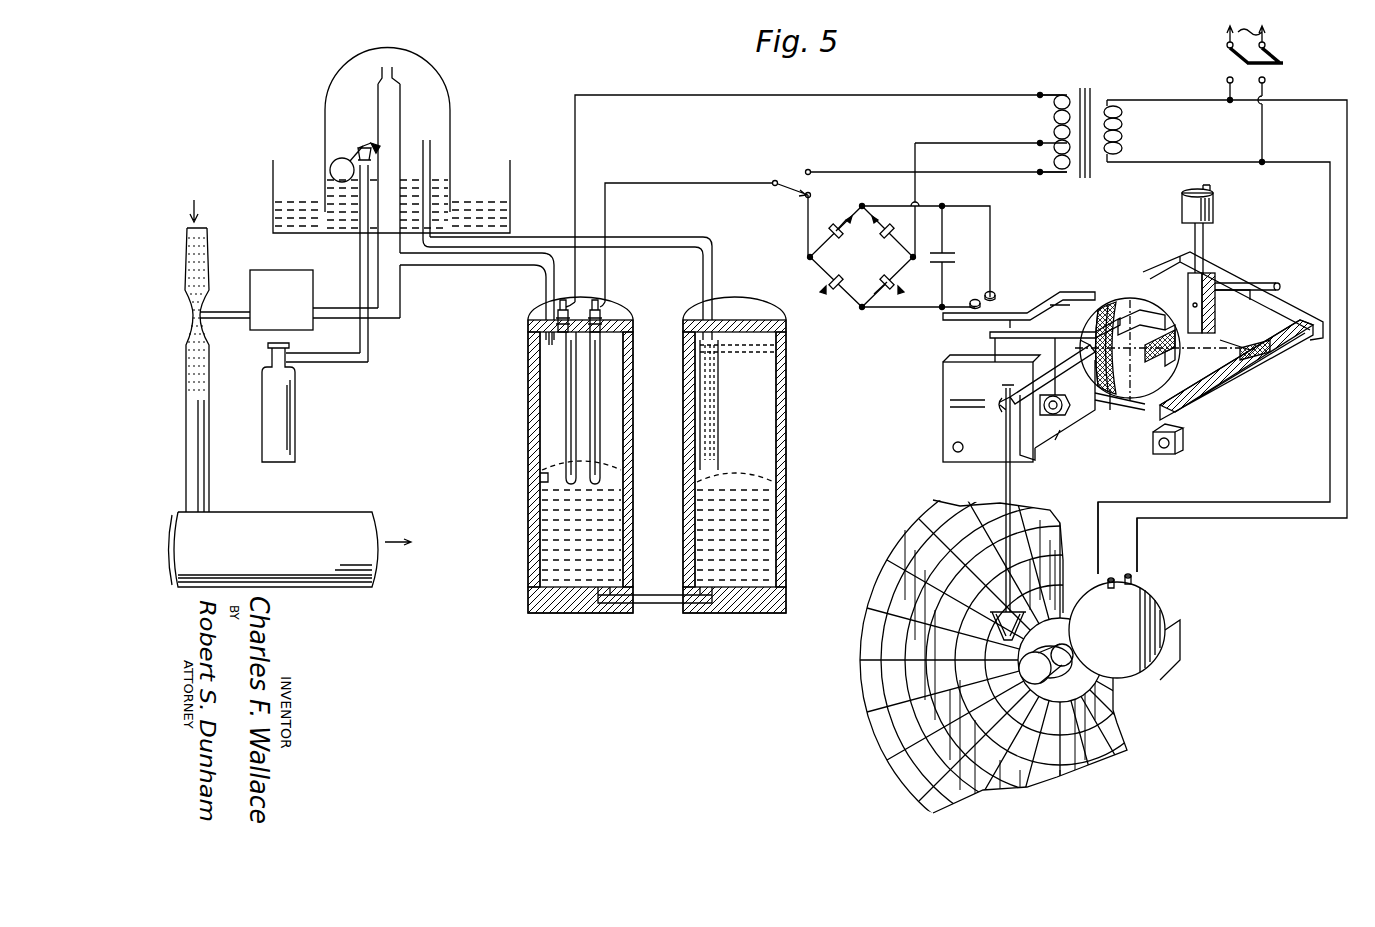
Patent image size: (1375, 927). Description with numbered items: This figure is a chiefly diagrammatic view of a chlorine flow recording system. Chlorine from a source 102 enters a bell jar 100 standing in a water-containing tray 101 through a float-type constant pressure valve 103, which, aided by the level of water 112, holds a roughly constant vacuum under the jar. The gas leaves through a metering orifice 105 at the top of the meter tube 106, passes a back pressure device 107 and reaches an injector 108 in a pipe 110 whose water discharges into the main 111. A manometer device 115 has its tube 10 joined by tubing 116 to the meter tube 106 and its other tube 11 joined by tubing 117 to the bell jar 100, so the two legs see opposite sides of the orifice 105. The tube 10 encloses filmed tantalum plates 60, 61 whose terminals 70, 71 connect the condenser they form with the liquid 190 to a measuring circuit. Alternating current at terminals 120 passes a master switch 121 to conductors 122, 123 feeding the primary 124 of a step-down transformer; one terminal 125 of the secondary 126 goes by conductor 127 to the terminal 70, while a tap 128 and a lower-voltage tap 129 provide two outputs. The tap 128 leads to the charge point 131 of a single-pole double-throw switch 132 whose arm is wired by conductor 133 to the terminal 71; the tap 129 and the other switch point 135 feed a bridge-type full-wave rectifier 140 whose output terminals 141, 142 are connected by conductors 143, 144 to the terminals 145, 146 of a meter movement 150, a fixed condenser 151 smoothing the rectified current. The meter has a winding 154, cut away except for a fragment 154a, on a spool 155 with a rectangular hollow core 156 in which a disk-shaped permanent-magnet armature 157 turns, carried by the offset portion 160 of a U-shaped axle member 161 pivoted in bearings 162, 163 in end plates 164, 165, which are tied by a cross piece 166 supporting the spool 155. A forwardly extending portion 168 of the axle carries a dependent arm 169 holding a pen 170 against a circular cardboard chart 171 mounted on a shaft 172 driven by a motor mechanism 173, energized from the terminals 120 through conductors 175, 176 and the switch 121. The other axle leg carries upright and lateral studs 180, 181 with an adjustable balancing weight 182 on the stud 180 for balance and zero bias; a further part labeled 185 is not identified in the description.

The manometer tube 10 is at (528, 383).
The manometer tube 11 is at (796, 382).
The filmed tantalum plate 60 is at (566, 420).
The filmed tantalum plate 61 is at (600, 442).
The terminal 70 is at (558, 303).
The terminal 71 is at (604, 303).
The bell jar 100 is at (450, 80).
The water-containing tray 101 is at (511, 178).
The source of chlorine gas 102 is at (293, 406).
The float-type constant pressure valve 103 is at (350, 152).
The metering orifice 105 is at (394, 68).
The meter tube 106 is at (398, 293).
The back pressure device 107 is at (290, 270).
The injector 108 is at (205, 290).
The pipe 110 is at (209, 368).
The main 111 is at (296, 512).
The level of water 112 is at (432, 162).
The manometer device 115 is at (519, 515).
The tubing 116 is at (460, 267).
The tubing 117 is at (668, 237).
The terminals 120 is at (1268, 36).
The master switch 121 is at (1276, 58).
The conductor 122 is at (1194, 100).
The conductor 123 is at (1199, 162).
The primary 124 is at (1110, 100).
The secondary terminal 125 is at (1042, 92).
The secondary 126 is at (1067, 90).
The conductor 127 is at (694, 95).
The tap 128 is at (1035, 172).
The tap 129 is at (1035, 143).
The switch point 131 is at (804, 162).
The single-pole double-throw switch 132 is at (790, 197).
The conductor 133 is at (672, 170).
The switch point 135 is at (804, 200).
The bridge-type full-wave rectifier 140 is at (838, 300).
The rectifier output terminal 141 is at (878, 300).
The rectifier output terminal 142 is at (862, 222).
The conductor 143 is at (918, 318).
The conductor 144 is at (960, 202).
The meter terminal 145 is at (982, 300).
The meter terminal 146 is at (996, 294).
The meter movement 150 is at (1090, 265).
The fixed condenser 151 is at (958, 262).
The winding 154 is at (990, 340).
The fragment of winding 154a is at (1258, 345).
The spool 155 is at (1125, 280).
The rectangular hollow core 156 is at (1056, 300).
The disk-shaped armature 157 is at (1157, 349).
The offset portion 160 is at (1125, 415).
The axle member 161 is at (1010, 375).
The pivot bearing 162 is at (1050, 440).
The pivot bearing 163 is at (1278, 284).
The end plate 164 is at (943, 397).
The end plate 165 is at (1280, 305).
The cross piece 166 is at (1265, 388).
The forwardly extending portion 168 is at (1045, 405).
The dependent arm 169 is at (1006, 481).
The pen 170 is at (880, 738).
The circular cardboard chart 171 is at (1058, 520).
The shaft 172 is at (1108, 641).
The motor mechanism 173 is at (1165, 606).
The conductor 175 is at (1330, 438).
The conductor 176 is at (1347, 478).
The upright stud 180 is at (1205, 233).
The lateral stud 181 is at (1250, 280).
The adjustable balancing weight 182 is at (1213, 195).
The block 185 is at (1150, 440).
The liquid 190 is at (540, 478).